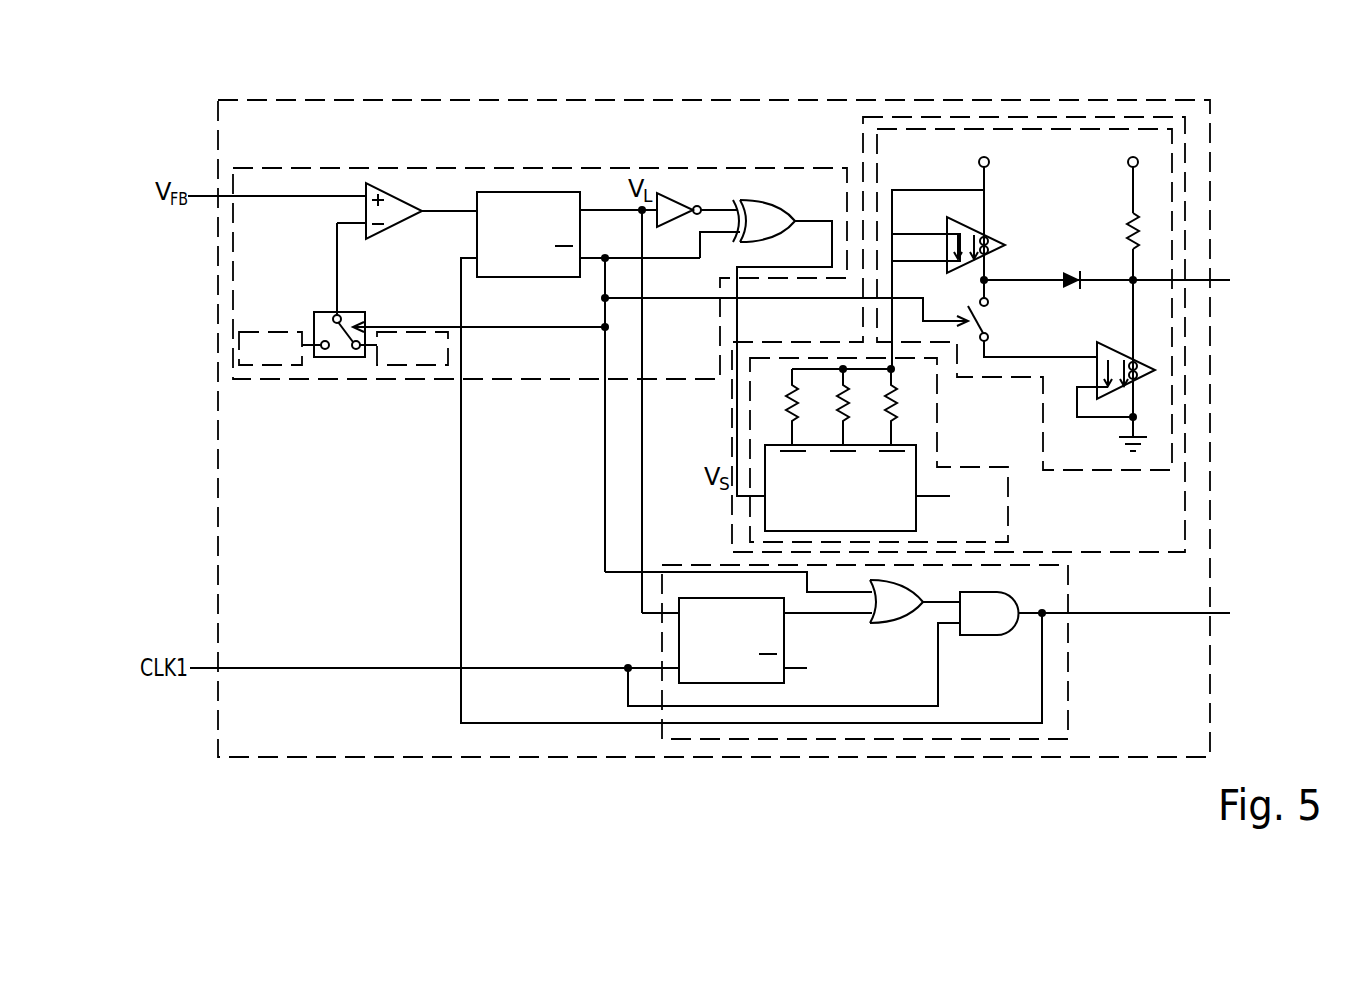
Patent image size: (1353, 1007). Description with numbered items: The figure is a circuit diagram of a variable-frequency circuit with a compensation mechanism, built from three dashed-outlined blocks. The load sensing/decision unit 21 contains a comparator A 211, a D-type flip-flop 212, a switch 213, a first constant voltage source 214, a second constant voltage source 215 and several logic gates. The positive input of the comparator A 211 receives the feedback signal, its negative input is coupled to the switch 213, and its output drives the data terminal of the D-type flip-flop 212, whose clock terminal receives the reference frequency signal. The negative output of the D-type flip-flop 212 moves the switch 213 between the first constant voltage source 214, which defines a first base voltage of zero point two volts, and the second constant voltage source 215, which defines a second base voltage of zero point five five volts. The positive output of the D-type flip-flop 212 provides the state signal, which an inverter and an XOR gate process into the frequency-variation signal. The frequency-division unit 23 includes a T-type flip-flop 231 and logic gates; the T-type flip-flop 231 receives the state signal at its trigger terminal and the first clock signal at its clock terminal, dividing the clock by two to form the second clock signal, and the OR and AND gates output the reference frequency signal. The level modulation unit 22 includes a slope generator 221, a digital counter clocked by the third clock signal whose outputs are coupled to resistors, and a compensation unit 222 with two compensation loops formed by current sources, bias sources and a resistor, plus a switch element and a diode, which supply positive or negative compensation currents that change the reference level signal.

The load sensing/decision unit 21 is at (305, 173).
The comparator A 211 is at (397, 205).
The D-type flip-flop 212 is at (530, 210).
The switch 213 is at (333, 357).
The first constant voltage source 214 is at (284, 366).
The second constant voltage source 215 is at (415, 366).
The level modulation unit 22 is at (1170, 513).
The slope generator 221 is at (997, 530).
The compensation unit 222 is at (1168, 200).
The frequency-division unit 23 is at (1053, 693).
The T-type flip-flop 231 is at (745, 673).